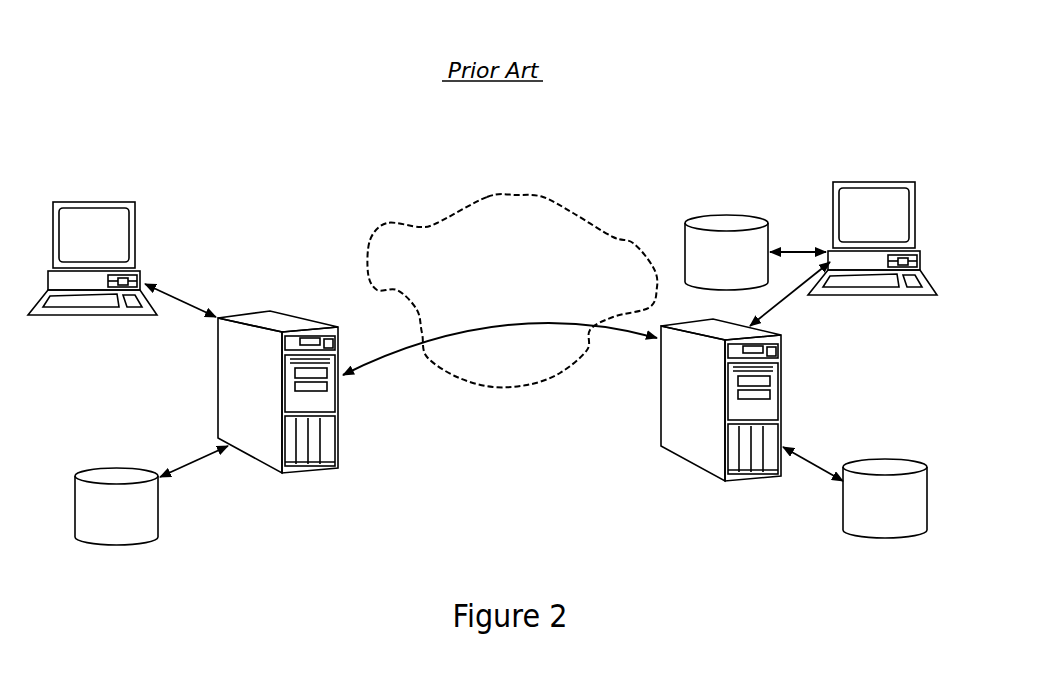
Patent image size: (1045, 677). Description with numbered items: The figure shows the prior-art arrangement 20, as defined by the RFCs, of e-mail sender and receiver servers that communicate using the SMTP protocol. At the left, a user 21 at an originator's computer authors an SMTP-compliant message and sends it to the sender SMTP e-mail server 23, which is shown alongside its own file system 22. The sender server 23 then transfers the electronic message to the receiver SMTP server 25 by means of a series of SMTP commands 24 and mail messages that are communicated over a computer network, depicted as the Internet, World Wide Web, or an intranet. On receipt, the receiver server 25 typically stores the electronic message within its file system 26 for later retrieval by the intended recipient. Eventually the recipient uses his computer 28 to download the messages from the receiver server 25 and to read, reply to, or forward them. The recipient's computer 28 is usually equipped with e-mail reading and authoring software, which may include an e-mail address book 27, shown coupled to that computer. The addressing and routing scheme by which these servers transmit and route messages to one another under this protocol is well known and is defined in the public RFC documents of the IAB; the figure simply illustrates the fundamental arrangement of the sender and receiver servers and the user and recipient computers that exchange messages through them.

The arrangement 20 is at (467, 146).
The user 21 is at (98, 317).
The file system 22 is at (118, 468).
The sender server 23 is at (339, 403).
The SMTP commands 24 is at (620, 336).
The receiver server 25 is at (780, 390).
The file system 26 is at (874, 465).
The e-mail address book 27 is at (713, 215).
The recipient's computer 28 is at (832, 207).